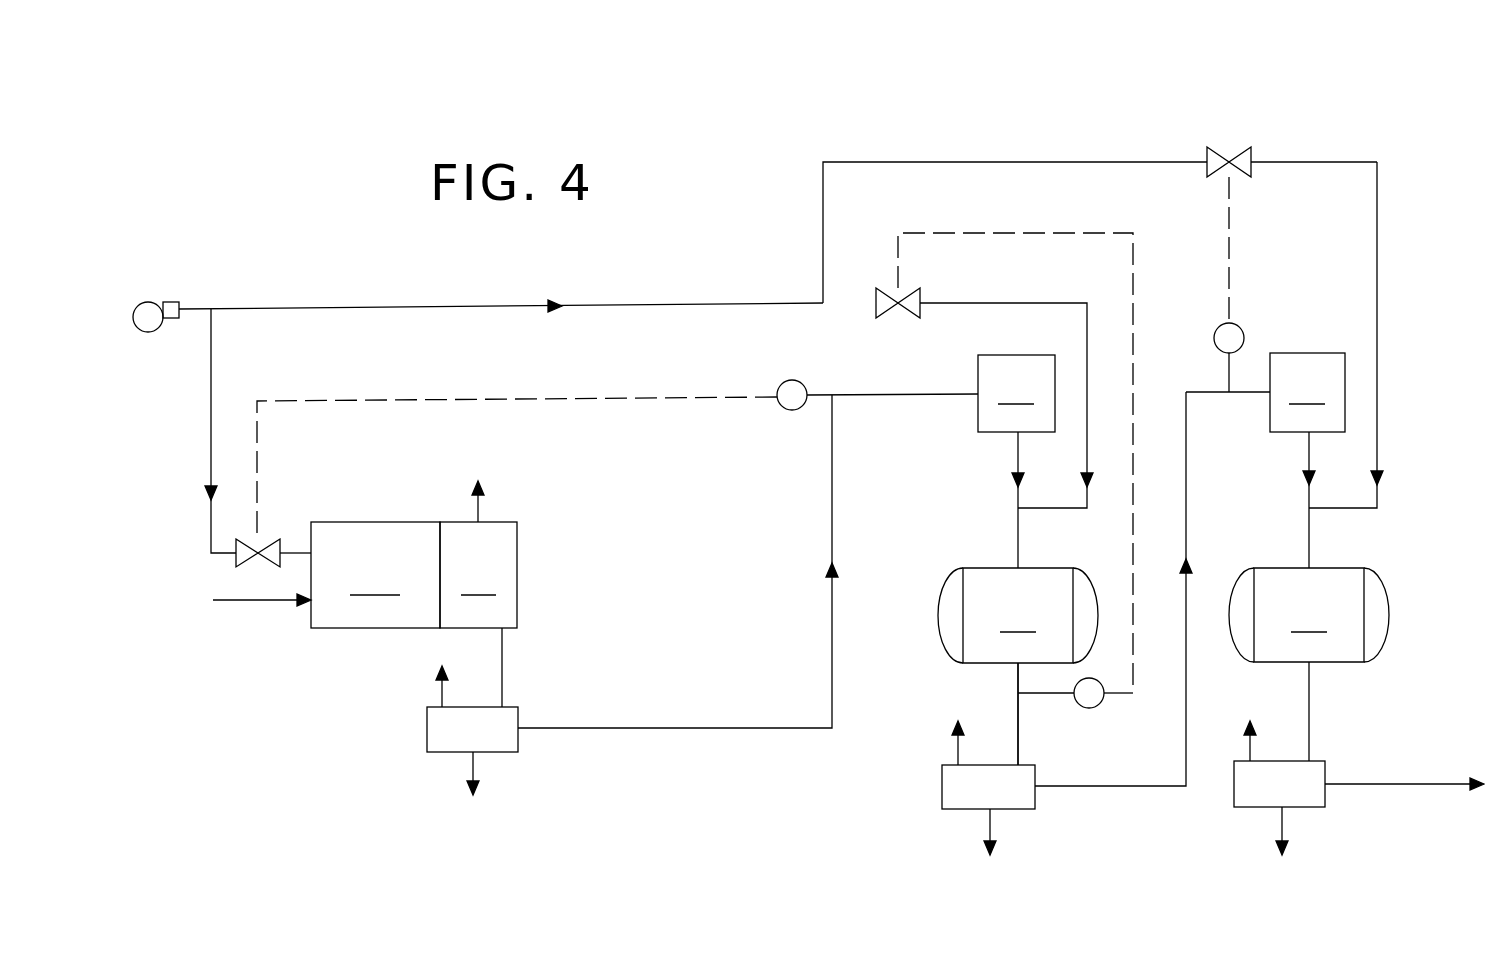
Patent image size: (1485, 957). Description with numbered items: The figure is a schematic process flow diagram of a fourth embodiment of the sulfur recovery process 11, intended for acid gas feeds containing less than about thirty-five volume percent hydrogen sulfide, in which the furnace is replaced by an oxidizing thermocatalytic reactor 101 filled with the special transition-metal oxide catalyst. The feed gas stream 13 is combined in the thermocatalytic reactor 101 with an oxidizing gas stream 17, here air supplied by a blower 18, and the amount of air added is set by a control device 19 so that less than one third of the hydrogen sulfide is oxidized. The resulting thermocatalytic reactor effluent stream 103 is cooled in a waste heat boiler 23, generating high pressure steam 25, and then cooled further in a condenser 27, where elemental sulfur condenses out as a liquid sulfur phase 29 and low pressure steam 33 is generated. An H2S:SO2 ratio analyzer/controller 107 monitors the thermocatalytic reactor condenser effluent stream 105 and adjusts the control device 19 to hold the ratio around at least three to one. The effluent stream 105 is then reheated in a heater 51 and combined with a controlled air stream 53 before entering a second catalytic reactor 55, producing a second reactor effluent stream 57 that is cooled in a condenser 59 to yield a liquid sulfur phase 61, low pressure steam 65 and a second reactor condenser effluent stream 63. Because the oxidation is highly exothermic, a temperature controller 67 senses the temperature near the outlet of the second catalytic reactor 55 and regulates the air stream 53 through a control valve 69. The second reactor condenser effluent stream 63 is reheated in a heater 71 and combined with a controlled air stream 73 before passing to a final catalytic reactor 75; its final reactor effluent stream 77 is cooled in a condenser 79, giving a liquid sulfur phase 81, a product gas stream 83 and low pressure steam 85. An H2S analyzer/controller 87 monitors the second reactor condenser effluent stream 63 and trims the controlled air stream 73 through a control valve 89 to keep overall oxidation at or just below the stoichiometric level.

The process 11 is at (308, 189).
The feed gas stream 13 is at (250, 600).
The oxidizing gas stream 17 is at (211, 438).
The blower 18 is at (148, 300).
The control device 19 is at (233, 565).
The waste heat boiler 23 is at (478, 575).
The high pressure steam 25 is at (480, 481).
The condenser 27 is at (427, 730).
The liquid sulfur phase 29 is at (465, 785).
The low pressure steam 33 is at (430, 675).
The heater 51 is at (1016, 393).
The air stream 53 is at (1060, 298).
The second catalytic reactor 55 is at (1018, 615).
The second reactor effluent stream 57 is at (1018, 732).
The condenser 59 is at (942, 786).
The liquid sulfur phase 61 is at (983, 843).
The second reactor condenser effluent stream 63 is at (1105, 788).
The low pressure steam 65 is at (945, 734).
The temperature controller 67 is at (1098, 707).
The control valve 69 is at (876, 290).
The heater 71 is at (1307, 392).
The controlled air stream 73 is at (1377, 216).
The final catalytic reactor 75 is at (1309, 615).
The final reactor effluent stream 77 is at (1309, 706).
The condenser 79 is at (1302, 810).
The liquid sulfur phase 81 is at (1275, 843).
The product gas stream 83 is at (1417, 784).
The low pressure steam 85 is at (1249, 747).
The H2S analyzer/controller 87 is at (1214, 338).
The control valve 89 is at (1205, 152).
The oxidizing thermocatalytic reactor 101 is at (375, 575).
The thermocatalytic reactor effluent stream 103 is at (502, 670).
The thermocatalytic reactor condenser effluent stream 105 is at (720, 720).
The H2S:SO2 ratio analyzer/controller 107 is at (792, 380).